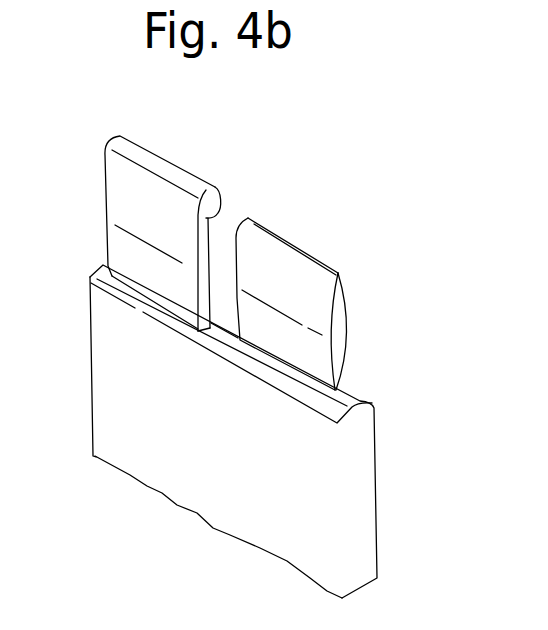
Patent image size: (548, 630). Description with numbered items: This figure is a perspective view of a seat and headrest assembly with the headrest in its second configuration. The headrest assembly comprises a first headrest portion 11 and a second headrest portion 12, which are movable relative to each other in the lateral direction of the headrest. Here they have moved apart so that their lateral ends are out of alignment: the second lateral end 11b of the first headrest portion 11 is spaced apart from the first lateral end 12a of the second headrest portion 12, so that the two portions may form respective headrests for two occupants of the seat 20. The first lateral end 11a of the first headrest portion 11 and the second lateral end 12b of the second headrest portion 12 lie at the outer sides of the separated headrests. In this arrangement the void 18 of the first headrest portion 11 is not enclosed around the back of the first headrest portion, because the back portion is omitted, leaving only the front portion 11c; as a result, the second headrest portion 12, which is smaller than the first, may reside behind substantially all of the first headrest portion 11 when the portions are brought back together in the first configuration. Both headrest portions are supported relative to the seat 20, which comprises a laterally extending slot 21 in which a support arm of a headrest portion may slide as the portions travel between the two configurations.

The first headrest portion 11 is at (145, 209).
The first lateral end of the first headrest portion 11a is at (103, 188).
The second lateral end of the first headrest portion 11b is at (222, 212).
The front portion of the first headrest portion 11c is at (122, 253).
The second headrest portion 12 is at (333, 280).
The first lateral end of the second headrest portion 12a is at (239, 221).
The second lateral end of the second headrest portion 12b is at (340, 323).
The void 18 is at (215, 263).
The seat 20 is at (130, 393).
The slot 21 is at (221, 335).